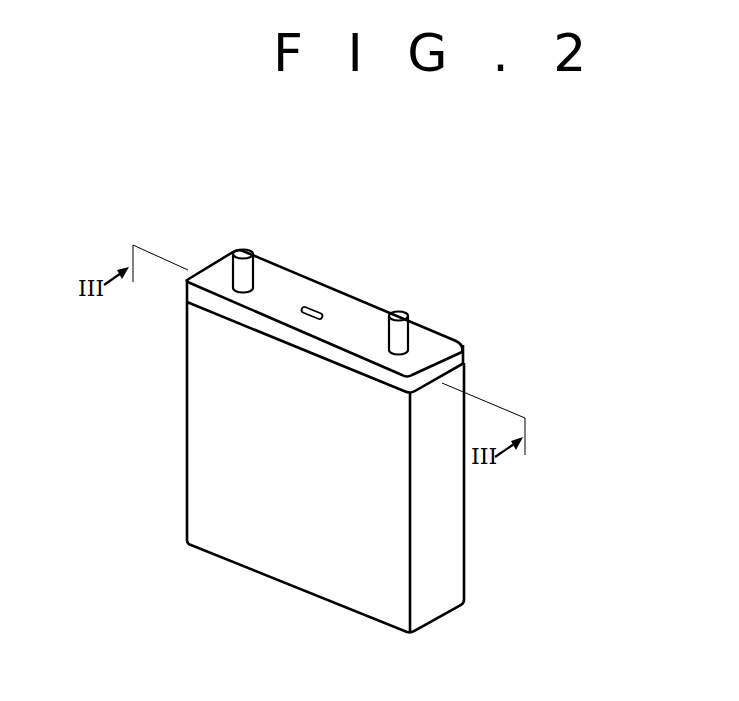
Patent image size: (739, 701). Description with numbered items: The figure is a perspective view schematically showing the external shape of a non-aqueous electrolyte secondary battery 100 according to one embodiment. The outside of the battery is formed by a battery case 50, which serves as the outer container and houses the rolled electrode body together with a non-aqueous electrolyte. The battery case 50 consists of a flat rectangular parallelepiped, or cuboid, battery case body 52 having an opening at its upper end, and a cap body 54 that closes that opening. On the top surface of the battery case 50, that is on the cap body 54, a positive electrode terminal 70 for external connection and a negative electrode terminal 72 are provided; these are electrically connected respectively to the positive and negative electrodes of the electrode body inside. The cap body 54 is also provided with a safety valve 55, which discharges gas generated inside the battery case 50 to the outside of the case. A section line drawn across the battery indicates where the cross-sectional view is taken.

The non-aqueous electrolyte secondary battery 100 is at (551, 219).
The battery case 50 is at (299, 562).
The battery case body 52 is at (455, 568).
The cap body 54 is at (465, 352).
The safety valve 55 is at (312, 305).
The positive electrode terminal 70 is at (246, 249).
The negative electrode terminal 72 is at (400, 311).